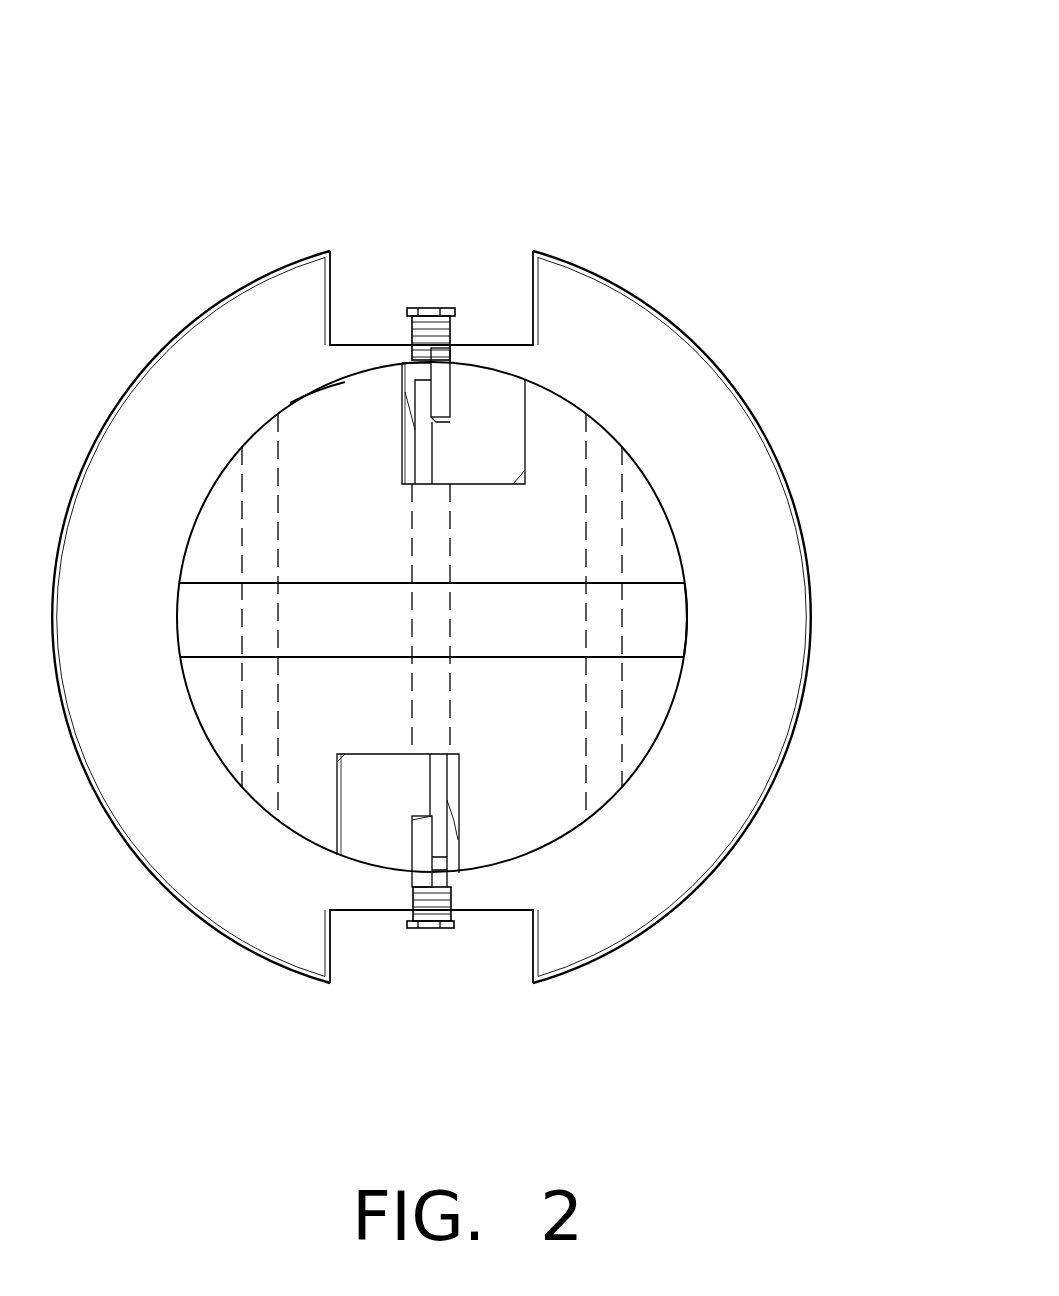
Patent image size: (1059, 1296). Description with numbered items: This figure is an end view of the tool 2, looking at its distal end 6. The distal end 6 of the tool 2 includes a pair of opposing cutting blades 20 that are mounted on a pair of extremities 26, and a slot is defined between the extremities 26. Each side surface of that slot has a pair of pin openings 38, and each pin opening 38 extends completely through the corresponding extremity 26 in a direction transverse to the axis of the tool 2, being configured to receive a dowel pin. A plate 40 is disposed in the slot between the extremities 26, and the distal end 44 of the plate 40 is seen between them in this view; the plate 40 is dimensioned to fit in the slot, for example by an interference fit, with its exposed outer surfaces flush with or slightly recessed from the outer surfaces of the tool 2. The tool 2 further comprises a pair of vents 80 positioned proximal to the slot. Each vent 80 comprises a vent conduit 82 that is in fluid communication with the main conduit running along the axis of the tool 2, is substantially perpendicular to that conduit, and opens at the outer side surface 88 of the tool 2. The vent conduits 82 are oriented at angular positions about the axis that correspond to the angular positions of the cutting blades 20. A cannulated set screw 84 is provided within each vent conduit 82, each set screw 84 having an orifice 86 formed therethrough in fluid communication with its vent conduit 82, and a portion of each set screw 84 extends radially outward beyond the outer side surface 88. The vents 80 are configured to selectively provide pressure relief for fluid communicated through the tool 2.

The tool 2 is at (560, 76).
The distal end 6 is at (645, 380).
The cutting blade 20 is at (412, 857).
The extremity 26 is at (320, 430).
The pin opening 38 is at (603, 518).
The ball seat surface 40 is at (660, 625).
The distal end of plate 44 is at (512, 641).
The vent 80 is at (483, 270).
The vent conduit 82 is at (428, 553).
The cannulated set screw 84 is at (412, 345).
The orifice 86 is at (422, 310).
The outer side surface 88 is at (320, 385).